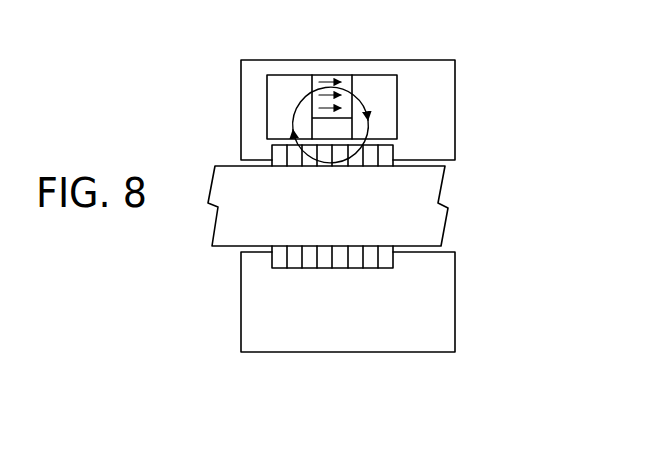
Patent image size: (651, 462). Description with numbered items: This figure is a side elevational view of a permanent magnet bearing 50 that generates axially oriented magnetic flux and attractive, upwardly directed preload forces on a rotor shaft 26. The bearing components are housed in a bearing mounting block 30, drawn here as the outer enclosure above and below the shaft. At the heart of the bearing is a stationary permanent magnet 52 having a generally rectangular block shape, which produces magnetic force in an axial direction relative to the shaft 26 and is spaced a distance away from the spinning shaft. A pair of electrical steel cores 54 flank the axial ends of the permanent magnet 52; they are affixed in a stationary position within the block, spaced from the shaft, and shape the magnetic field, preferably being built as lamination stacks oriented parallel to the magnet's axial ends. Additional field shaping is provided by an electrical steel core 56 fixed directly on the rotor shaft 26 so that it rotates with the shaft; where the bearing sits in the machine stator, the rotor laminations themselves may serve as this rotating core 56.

The rotor shaft 26 is at (233, 227).
The bearing mounting block 30 is at (463, 72).
The permanent magnet bearing 50 is at (470, 212).
The stationary permanent magnet 52 is at (312, 78).
The electrical steel cores 54 is at (375, 83).
The electrical steel core 56 is at (312, 253).